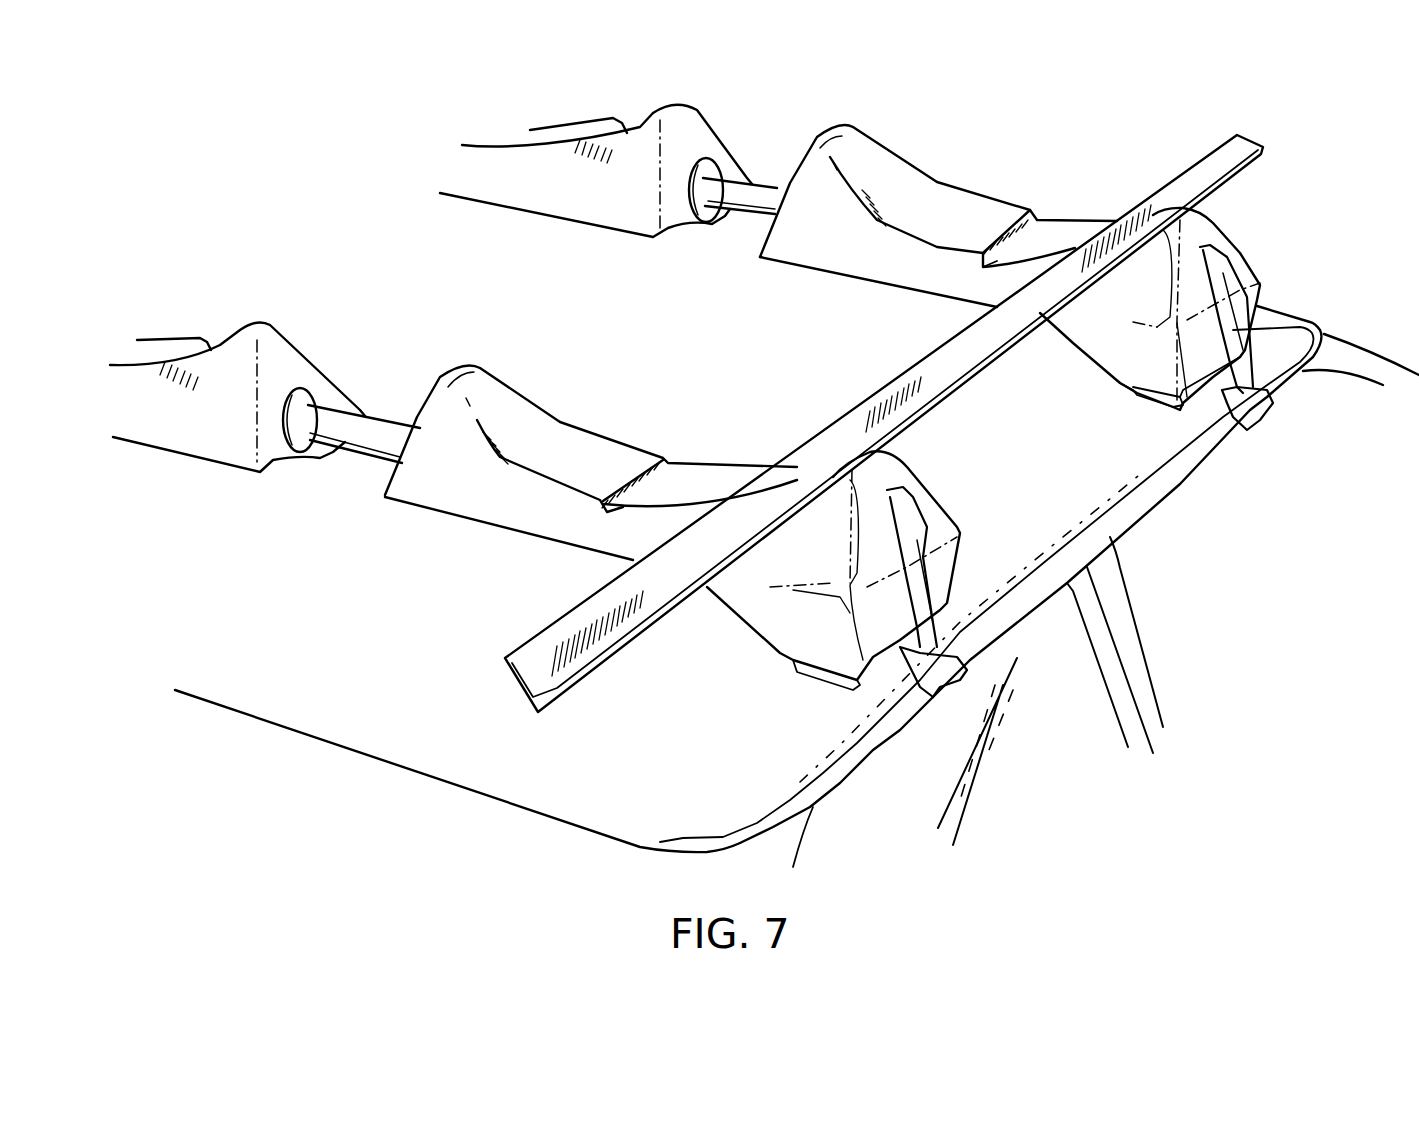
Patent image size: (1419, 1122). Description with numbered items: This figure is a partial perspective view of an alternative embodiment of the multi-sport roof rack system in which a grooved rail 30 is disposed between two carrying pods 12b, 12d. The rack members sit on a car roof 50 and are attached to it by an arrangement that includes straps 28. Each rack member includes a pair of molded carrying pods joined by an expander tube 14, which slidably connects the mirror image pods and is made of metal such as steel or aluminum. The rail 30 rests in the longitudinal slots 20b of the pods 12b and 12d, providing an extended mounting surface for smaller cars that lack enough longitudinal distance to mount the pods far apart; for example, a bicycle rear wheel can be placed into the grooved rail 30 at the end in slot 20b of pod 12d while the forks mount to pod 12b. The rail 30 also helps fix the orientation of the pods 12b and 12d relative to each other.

The car roof 50 is at (481, 585).
The expander tube 14 is at (771, 180).
The carrying pod 12b is at (726, 457).
The carrying pod 12d is at (1072, 210).
The grooved rail 30 is at (918, 362).
The longitudinal slot 20b is at (1097, 285).
The strap 28 is at (1213, 257).